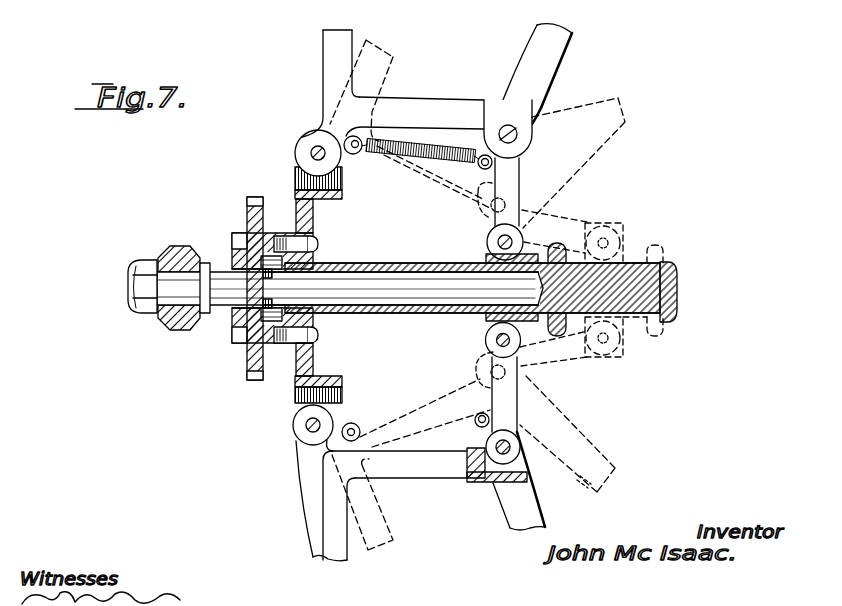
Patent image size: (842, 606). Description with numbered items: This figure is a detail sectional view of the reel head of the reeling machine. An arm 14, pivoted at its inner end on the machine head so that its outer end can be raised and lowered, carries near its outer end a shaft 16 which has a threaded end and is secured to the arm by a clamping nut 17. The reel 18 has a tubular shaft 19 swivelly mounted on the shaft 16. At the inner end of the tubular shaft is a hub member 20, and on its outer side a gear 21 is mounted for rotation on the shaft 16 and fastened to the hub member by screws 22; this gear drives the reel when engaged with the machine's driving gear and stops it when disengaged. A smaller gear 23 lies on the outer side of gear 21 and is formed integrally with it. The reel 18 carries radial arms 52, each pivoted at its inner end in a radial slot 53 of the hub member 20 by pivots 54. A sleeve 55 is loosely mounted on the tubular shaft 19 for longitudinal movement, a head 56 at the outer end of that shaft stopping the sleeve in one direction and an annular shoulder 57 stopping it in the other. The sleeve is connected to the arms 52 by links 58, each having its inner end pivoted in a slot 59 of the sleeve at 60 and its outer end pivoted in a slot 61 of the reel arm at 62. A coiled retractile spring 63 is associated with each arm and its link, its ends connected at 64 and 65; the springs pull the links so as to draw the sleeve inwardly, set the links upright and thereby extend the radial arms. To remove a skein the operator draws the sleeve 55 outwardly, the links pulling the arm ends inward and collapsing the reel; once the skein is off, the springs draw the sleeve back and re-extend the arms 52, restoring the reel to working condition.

The arm 14 is at (178, 256).
The shaft 16 is at (389, 300).
The clamping nut 17 is at (142, 306).
The reel 18 is at (452, 277).
The tubular shaft 19 is at (455, 314).
The hub member 20 is at (315, 216).
The gear 21 is at (250, 212).
The screws 22 is at (320, 243).
The gear 23 is at (242, 255).
The radial arms 52 is at (340, 295).
The radial slot 53 is at (297, 184).
The pivots 54 is at (307, 153).
The sleeve 55 is at (538, 260).
The head 56 is at (666, 262).
The annular shoulder 57 is at (487, 261).
The links 58 is at (518, 170).
The slot 59 is at (540, 262).
The pivot 60 is at (498, 238).
The slot 61 is at (528, 130).
The pivot 62 is at (514, 128).
The coiled retractile spring 63 is at (416, 155).
The spring end connection 64 is at (355, 150).
The spring end connection 65 is at (481, 167).